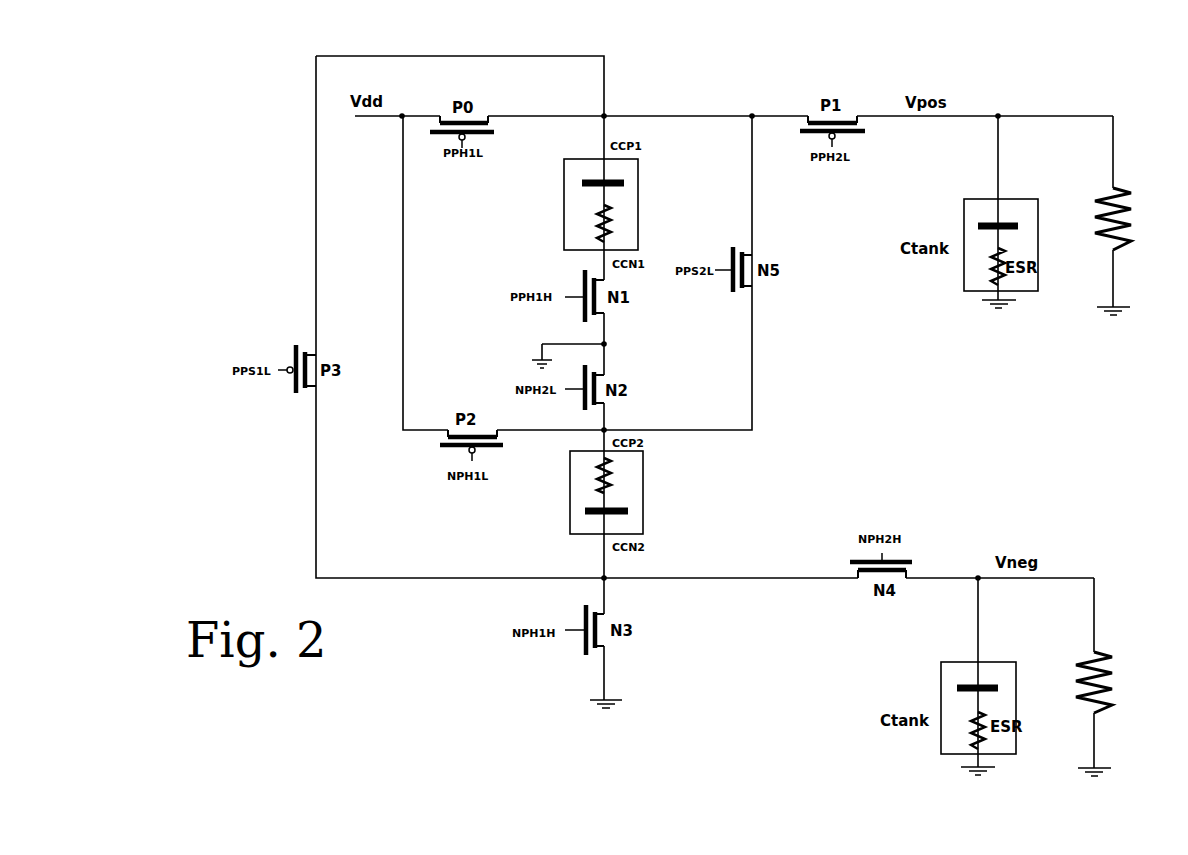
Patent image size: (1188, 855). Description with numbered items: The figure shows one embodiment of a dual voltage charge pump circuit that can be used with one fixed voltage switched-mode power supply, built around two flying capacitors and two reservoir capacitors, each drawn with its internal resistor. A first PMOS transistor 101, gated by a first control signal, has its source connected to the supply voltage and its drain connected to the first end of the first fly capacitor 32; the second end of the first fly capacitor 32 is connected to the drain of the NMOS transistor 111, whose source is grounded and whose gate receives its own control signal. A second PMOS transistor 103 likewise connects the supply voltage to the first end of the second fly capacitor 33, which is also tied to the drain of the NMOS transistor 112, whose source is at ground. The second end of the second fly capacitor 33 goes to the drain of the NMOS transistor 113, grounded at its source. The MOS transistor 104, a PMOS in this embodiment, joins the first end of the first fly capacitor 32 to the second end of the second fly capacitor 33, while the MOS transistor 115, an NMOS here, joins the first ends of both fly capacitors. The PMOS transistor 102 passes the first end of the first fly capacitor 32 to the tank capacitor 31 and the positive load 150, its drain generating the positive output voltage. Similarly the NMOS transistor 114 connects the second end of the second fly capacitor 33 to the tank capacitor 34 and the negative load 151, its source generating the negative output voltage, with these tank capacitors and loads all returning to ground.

The first PMOS transistor 101 is at (491, 133).
The PMOS transistor 102 is at (862, 132).
The second PMOS transistor 103 is at (499, 446).
The MOS transistor 104 is at (296, 395).
The NMOS transistor 111 is at (584, 276).
The NMOS transistor 112 is at (585, 407).
The NMOS transistor 113 is at (586, 640).
The NMOS transistor 114 is at (912, 561).
The MOS transistor 115 is at (733, 291).
The tank capacitor 31 is at (1038, 199).
The first fly capacitor 32 is at (638, 216).
The second fly capacitor 33 is at (643, 495).
The tank capacitor 34 is at (1008, 662).
The positive load 150 is at (1125, 222).
The negative load 151 is at (1108, 683).